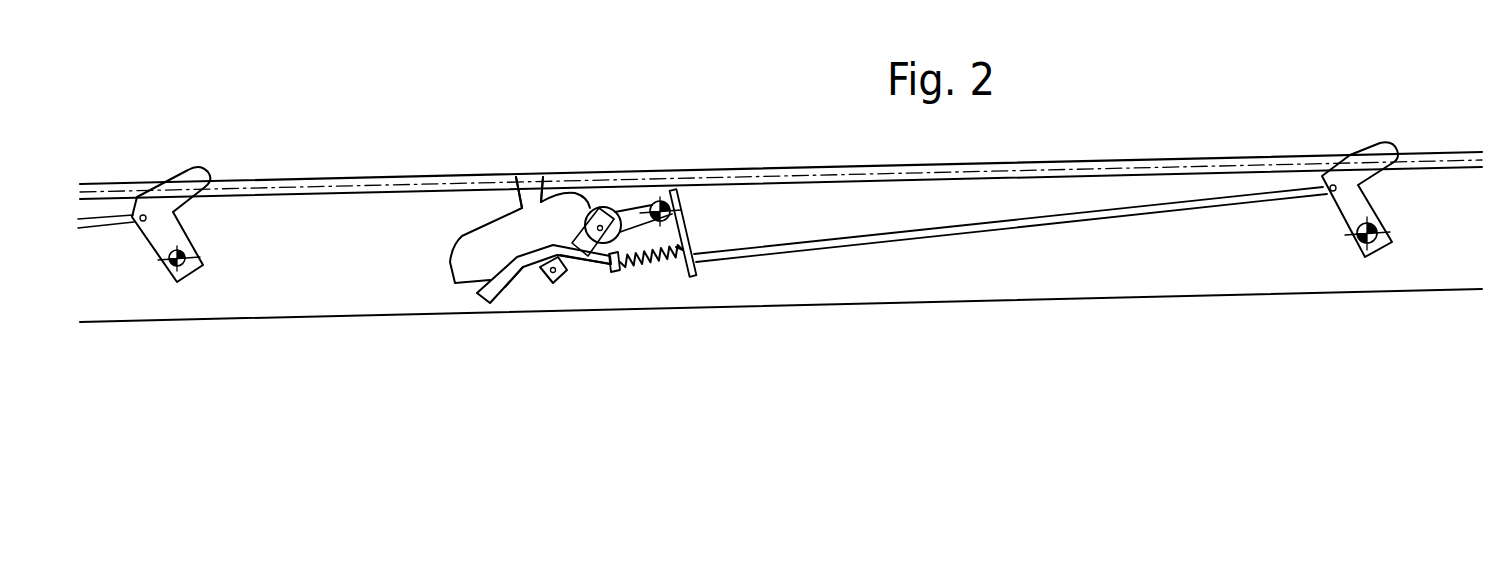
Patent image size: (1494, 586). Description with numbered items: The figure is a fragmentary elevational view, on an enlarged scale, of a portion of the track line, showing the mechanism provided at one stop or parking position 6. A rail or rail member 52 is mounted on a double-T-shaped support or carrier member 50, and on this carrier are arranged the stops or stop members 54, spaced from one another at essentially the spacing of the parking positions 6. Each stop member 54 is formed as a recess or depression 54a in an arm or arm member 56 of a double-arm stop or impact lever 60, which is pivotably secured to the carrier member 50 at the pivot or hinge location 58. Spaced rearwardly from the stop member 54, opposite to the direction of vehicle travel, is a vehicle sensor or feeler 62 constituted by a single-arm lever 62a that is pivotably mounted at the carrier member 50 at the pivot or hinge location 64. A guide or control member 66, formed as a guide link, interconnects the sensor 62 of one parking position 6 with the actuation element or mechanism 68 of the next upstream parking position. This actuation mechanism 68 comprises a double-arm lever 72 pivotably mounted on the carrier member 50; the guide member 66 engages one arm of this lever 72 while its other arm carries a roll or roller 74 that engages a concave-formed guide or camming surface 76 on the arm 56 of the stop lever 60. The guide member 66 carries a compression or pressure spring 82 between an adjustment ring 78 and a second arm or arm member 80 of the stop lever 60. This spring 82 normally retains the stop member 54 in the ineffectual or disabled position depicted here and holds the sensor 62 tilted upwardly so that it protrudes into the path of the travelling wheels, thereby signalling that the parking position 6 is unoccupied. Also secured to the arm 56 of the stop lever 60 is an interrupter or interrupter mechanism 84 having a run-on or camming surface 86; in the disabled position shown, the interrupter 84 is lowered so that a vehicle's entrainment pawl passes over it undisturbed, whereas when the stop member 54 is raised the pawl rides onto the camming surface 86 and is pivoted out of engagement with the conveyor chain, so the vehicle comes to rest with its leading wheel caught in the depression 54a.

The stop or parking position 6 is at (352, 333).
The support or carrier member 50 is at (1180, 297).
The rail or rail member 52 is at (1170, 160).
The stop or stop member 54 is at (517, 178).
The recess or depression 54a is at (546, 177).
The arm or arm member 56 is at (465, 238).
The pivot or hinge location 58 is at (670, 188).
The stop or impact lever 60 is at (677, 207).
The vehicle sensor or feeler 62 is at (1377, 200).
The single-arm lever 62a is at (160, 228).
The pivot or hinge location 64 is at (183, 267).
The guide or control member 66 is at (787, 253).
The actuation element or mechanism 68 is at (550, 290).
The double-arm lever 72 is at (562, 277).
The roll or roller 74 is at (630, 220).
The guide or camming surface 76 is at (582, 220).
The adjustment ring 78 is at (620, 272).
The second arm or arm member 80 is at (690, 242).
The compression or pressure spring 82 is at (667, 263).
The interrupter or interrupter mechanism 84 is at (528, 267).
The run-on or camming surface 86 is at (480, 288).